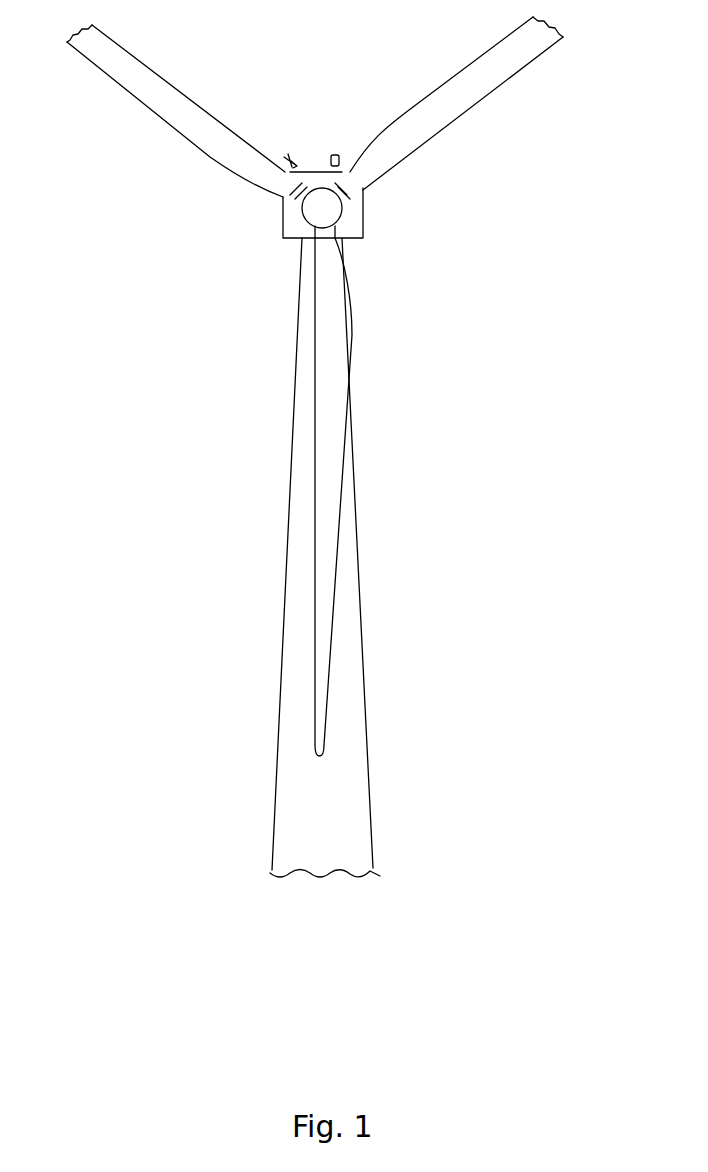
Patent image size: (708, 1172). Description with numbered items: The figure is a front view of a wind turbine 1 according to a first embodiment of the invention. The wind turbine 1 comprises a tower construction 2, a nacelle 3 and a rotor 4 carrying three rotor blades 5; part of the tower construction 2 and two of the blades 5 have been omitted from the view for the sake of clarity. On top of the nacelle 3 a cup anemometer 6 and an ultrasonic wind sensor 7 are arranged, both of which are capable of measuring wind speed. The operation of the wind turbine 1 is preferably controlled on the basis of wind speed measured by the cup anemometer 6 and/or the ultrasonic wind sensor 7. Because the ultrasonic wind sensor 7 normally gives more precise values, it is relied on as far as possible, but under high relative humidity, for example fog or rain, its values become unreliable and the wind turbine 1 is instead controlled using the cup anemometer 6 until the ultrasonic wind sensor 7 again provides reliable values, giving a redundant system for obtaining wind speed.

The wind turbine 1 is at (545, 430).
The tower construction 2 is at (347, 805).
The nacelle 3 is at (333, 208).
The rotor 4 is at (322, 208).
The rotor blades 5 is at (143, 83).
The cup anemometer 6 is at (293, 157).
The ultrasonic wind sensor 7 is at (335, 152).